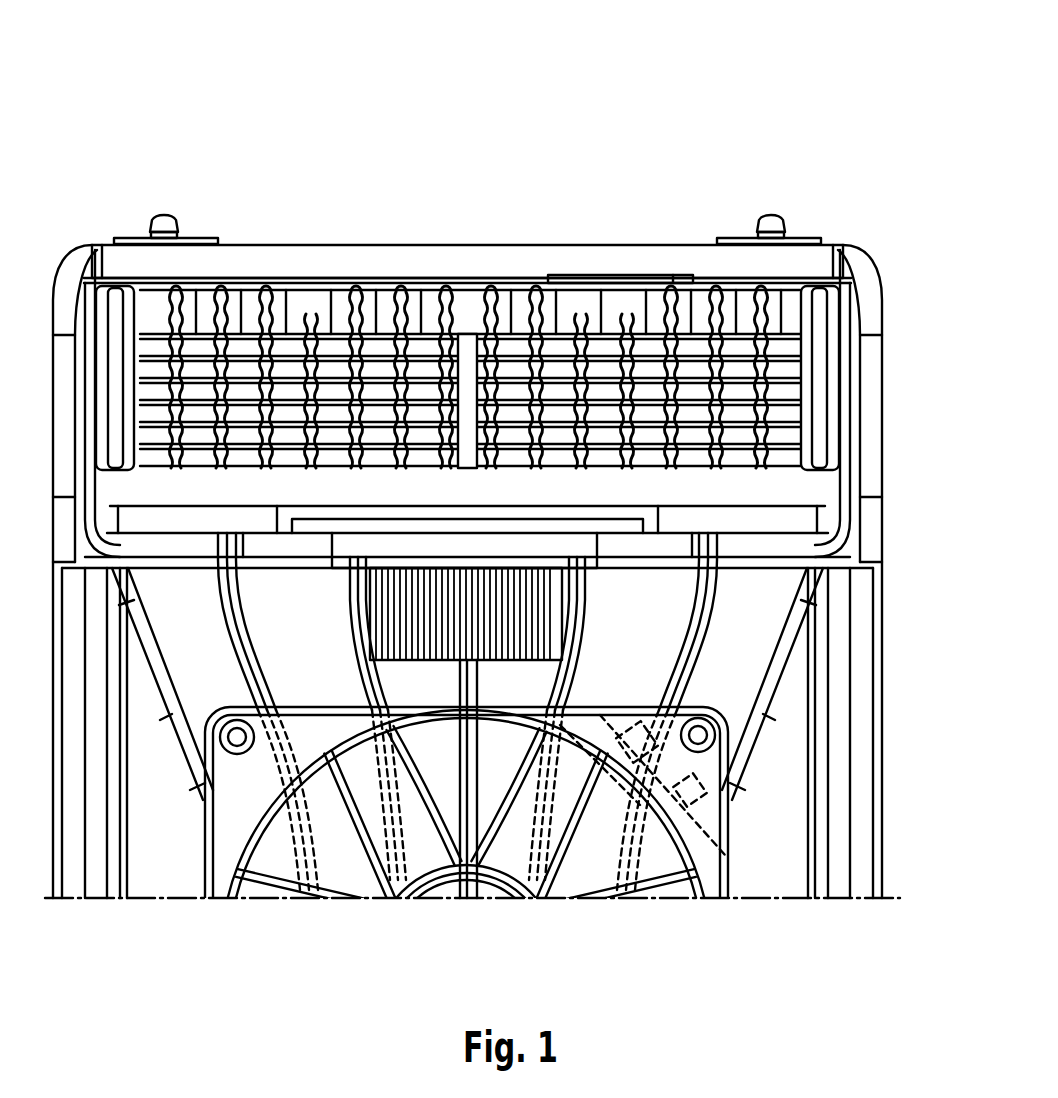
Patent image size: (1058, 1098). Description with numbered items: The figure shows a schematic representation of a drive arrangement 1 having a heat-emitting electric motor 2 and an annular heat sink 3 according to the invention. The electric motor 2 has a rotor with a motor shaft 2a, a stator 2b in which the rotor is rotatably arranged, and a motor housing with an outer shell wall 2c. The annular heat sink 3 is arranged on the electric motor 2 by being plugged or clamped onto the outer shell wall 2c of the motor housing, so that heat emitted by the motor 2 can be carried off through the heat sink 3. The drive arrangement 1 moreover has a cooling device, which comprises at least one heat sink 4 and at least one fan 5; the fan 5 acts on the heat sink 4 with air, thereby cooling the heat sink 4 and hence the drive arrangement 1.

The drive arrangement 1 is at (806, 165).
The electric motor 2 is at (587, 545).
The motor shaft 2a is at (532, 637).
The stator 2b is at (347, 550).
The outer shell wall 2c is at (272, 520).
The annular heat sink 3 is at (737, 350).
The heat sink 4 is at (800, 490).
The fan 5 is at (707, 823).